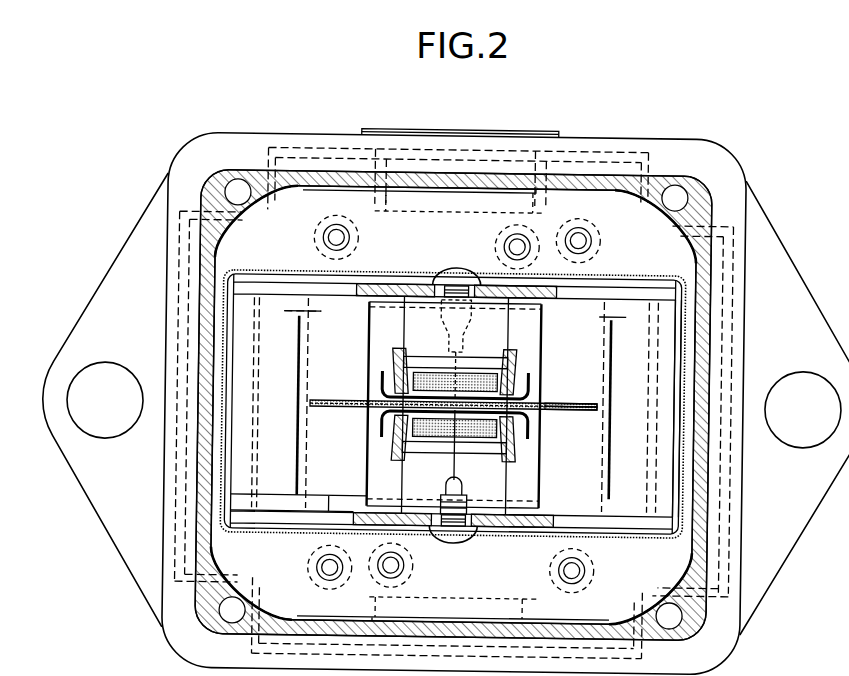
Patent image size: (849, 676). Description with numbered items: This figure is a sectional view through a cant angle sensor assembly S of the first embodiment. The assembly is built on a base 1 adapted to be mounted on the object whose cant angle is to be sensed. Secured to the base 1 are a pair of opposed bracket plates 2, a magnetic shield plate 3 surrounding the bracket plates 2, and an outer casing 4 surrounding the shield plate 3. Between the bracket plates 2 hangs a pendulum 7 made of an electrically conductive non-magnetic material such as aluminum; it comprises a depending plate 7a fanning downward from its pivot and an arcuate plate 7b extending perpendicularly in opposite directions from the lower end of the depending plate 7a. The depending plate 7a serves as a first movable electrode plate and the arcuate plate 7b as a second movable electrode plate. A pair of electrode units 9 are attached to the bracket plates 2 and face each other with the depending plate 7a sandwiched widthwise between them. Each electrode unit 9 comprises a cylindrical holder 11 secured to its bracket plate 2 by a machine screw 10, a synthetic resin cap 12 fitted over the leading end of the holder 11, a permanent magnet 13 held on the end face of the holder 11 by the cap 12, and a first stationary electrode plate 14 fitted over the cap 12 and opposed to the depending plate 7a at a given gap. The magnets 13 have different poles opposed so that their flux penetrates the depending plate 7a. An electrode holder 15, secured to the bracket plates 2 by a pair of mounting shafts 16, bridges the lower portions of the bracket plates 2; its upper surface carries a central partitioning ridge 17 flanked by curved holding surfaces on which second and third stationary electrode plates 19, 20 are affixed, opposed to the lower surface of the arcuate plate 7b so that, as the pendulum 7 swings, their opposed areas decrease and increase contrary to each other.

The cant angle sensor assembly S is at (748, 152).
The base 1 is at (128, 248).
The bracket plates 2 is at (380, 286).
The magnetic shield plate 3 is at (690, 323).
The outer casing 4 is at (706, 485).
The pendulum 7 is at (563, 401).
The depending plate 7a is at (560, 409).
The arcuate plate 7b is at (542, 470).
The electrode units 9 is at (512, 331).
The machine screw 10 is at (455, 272).
The cylindrical holder 11 is at (485, 342).
The cap 12 is at (398, 355).
The permanent magnet 13 is at (425, 380).
The first stationary electrode plate 14 is at (384, 388).
The electrode holder 15 is at (666, 434).
The mounting shafts 16 is at (305, 330).
The partitioning ridge 17 is at (456, 393).
The second stationary electrode plate 19 is at (310, 362).
The third stationary electrode plate 20 is at (600, 333).